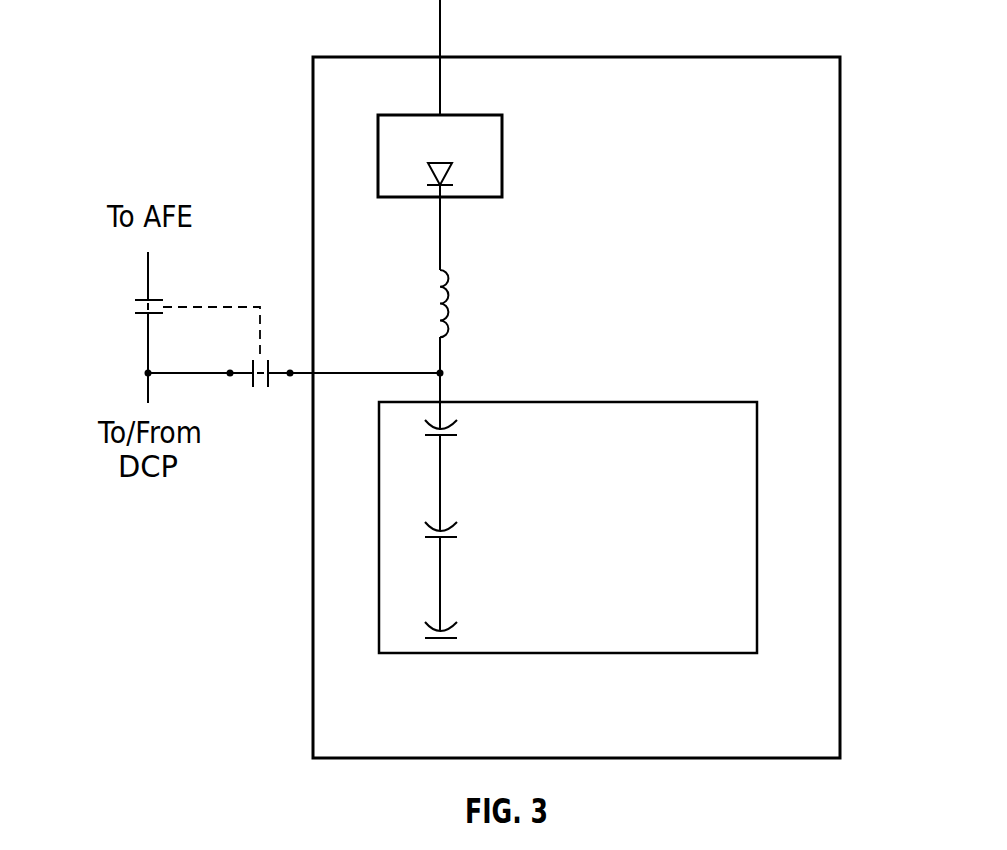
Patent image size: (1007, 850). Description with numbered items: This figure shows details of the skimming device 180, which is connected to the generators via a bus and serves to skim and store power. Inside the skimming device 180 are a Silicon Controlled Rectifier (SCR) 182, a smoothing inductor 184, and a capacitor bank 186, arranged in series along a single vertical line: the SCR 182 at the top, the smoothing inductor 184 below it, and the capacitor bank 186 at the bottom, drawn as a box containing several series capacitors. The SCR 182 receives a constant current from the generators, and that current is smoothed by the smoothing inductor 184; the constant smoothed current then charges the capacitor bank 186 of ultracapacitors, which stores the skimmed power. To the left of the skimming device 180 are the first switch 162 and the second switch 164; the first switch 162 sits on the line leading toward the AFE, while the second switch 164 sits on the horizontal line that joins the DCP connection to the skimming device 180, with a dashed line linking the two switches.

The skimming device 180 is at (775, 57).
The Silicon Controlled Rectifier (SCR) 182 is at (502, 155).
The smoothing inductor 184 is at (450, 312).
The capacitor bank 186 is at (693, 402).
The first switch 162 is at (135, 307).
The second switch 164 is at (258, 387).